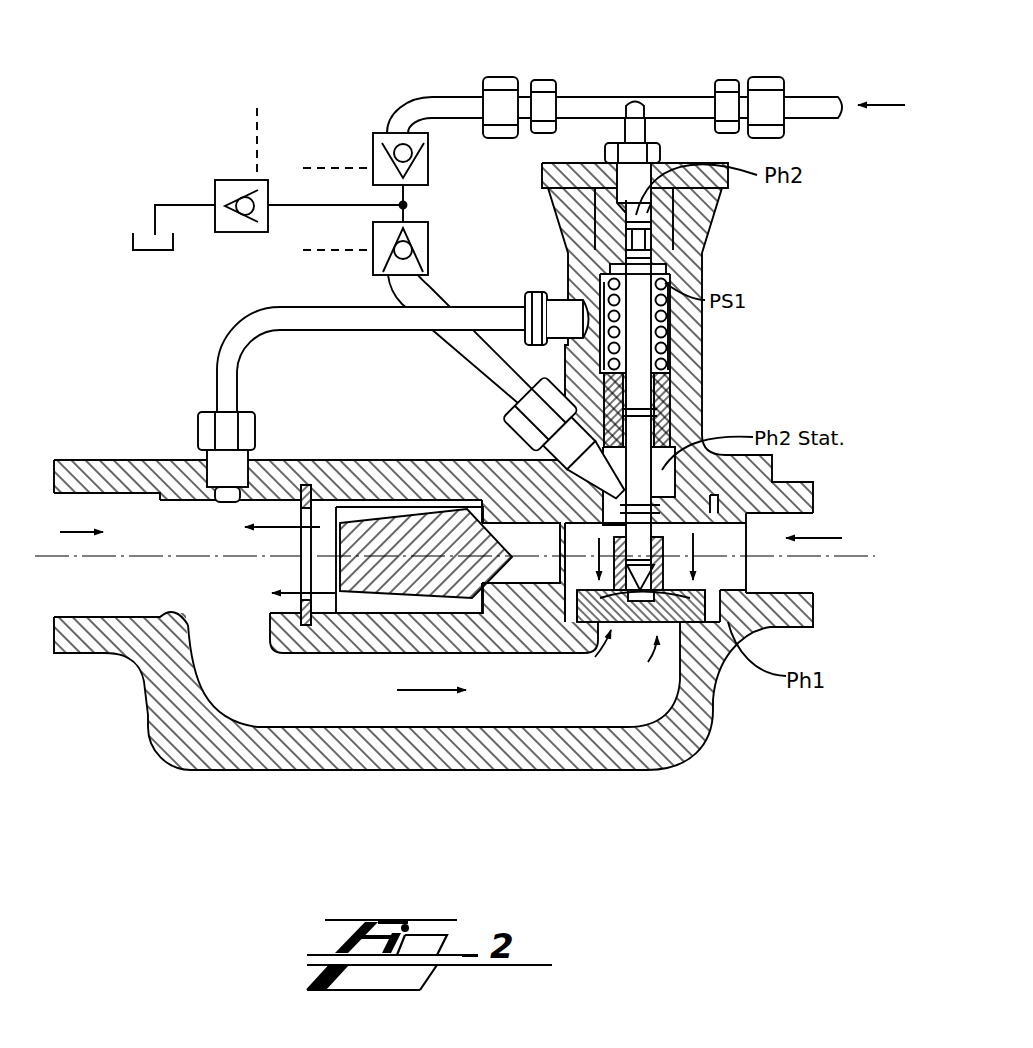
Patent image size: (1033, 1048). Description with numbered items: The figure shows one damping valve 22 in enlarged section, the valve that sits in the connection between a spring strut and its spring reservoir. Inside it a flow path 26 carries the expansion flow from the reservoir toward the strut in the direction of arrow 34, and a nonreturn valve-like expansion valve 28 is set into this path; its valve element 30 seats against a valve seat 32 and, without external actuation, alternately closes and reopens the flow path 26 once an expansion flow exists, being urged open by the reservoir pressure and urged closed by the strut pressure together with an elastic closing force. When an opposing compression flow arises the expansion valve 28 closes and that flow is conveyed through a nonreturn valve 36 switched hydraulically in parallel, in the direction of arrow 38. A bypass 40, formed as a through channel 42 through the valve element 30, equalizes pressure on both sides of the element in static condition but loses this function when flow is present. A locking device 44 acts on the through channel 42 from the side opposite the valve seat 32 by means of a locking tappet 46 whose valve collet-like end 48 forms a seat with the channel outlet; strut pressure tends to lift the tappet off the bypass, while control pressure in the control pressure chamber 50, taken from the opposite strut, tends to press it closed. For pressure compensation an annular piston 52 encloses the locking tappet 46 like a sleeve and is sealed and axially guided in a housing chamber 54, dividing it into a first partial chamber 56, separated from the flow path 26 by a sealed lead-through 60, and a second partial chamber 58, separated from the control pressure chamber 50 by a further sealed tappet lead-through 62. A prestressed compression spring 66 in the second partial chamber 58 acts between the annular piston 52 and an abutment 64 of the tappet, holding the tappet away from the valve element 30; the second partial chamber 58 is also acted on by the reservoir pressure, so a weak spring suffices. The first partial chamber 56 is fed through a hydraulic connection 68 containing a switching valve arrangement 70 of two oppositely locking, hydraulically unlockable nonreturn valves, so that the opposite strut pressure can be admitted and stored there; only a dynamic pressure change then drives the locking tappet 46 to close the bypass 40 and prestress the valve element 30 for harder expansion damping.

The damping valve 22 is at (657, 790).
The flow path 26 is at (583, 754).
The expansion valve 28 is at (620, 680).
The valve element 30 is at (585, 620).
The valve seat 32 is at (590, 625).
The arrow (expansion flow direction) 34 is at (441, 694).
The nonreturn valve 36 is at (478, 494).
The arrow (compression flow direction) 38 is at (284, 526).
The bypass 40 is at (660, 642).
The through channel 42 is at (714, 690).
The locking device 44 is at (704, 380).
The locking tappet 46 is at (700, 536).
The valve collet-like end 48 is at (624, 541).
The control pressure chamber 50 is at (628, 216).
The annular piston 52 is at (665, 392).
The housing chamber 54 is at (676, 323).
The first partial chamber 56 is at (674, 455).
The second partial chamber 58 is at (602, 286).
The sealed lead-through 60 is at (500, 468).
The sealed tappet lead-through 62 is at (688, 264).
The abutment 64 is at (650, 239).
The compression spring 66 is at (704, 412).
The hydraulic connection 68 is at (405, 112).
The switching valve arrangement 70 is at (360, 136).